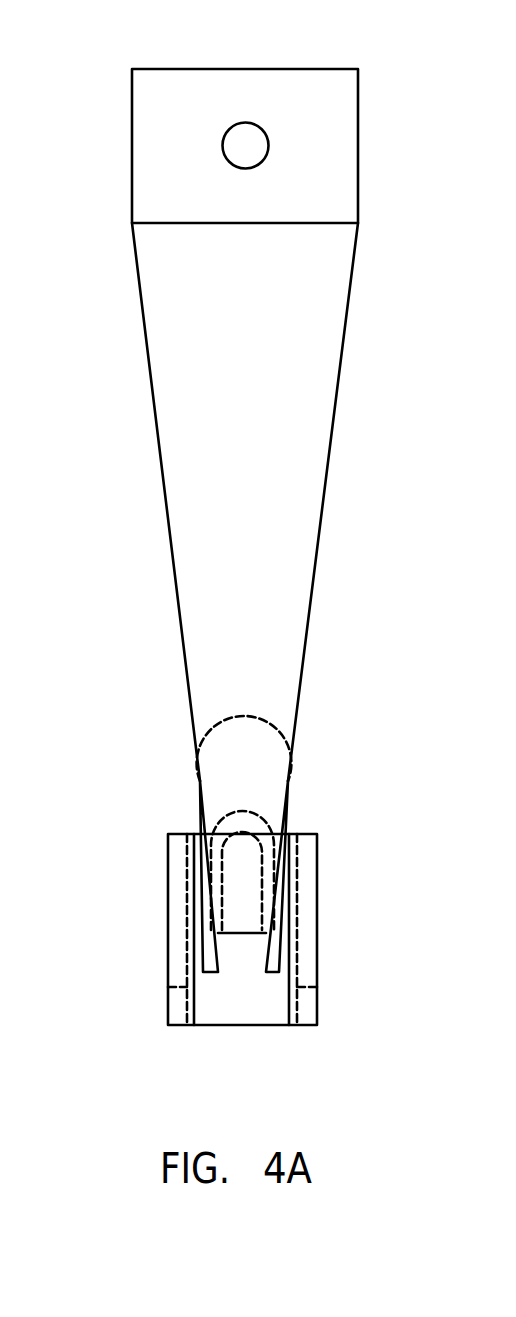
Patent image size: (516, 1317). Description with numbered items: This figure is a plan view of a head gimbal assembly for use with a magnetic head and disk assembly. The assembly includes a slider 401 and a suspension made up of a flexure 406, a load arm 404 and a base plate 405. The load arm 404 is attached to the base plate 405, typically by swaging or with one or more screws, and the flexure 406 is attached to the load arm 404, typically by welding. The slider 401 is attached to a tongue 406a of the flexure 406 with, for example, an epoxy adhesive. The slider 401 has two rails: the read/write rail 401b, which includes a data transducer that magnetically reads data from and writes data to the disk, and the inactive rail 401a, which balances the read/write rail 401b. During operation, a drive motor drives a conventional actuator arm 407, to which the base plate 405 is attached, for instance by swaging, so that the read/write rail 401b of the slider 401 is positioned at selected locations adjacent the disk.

The slider 401 is at (318, 905).
The inactive rail 401a is at (178, 1004).
The read/write rail 401b is at (303, 1007).
The load arm 404 is at (142, 322).
The base plate 405 is at (132, 138).
The flexure 406 is at (288, 821).
The tongue 406a is at (238, 871).
The actuator arm 407 is at (244, 123).